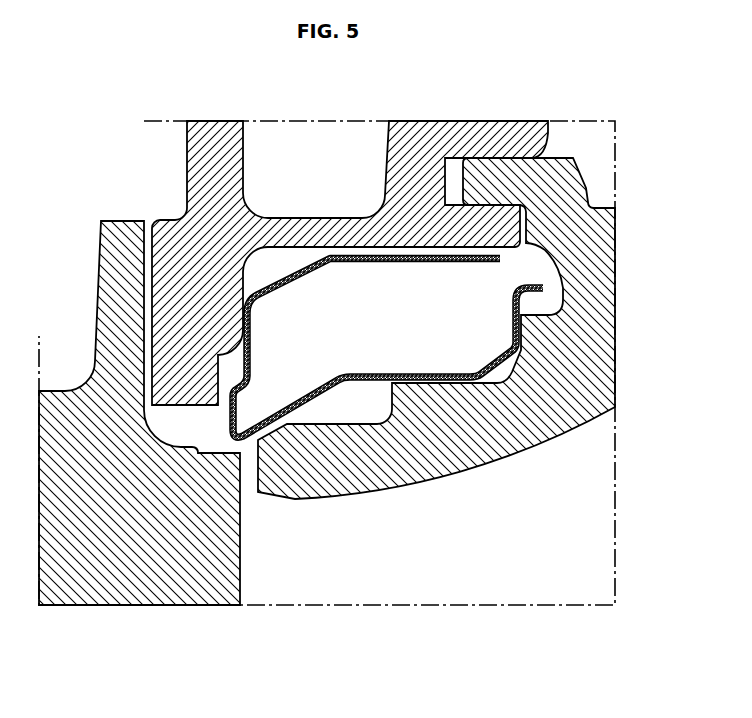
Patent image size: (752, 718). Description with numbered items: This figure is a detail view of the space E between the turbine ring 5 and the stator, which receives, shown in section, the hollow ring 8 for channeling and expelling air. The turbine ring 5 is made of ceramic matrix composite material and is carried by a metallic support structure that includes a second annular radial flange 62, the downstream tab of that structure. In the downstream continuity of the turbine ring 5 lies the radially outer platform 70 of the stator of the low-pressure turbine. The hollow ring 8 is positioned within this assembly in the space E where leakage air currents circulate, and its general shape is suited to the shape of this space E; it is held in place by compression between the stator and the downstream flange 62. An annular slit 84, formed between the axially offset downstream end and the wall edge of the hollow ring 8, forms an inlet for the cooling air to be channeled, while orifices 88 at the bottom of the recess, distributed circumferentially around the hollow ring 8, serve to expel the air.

The turbine ring 5 is at (122, 523).
The second annular radial flange 62 is at (189, 294).
The radially outer platform 70 is at (453, 433).
The hollow ring 8 is at (283, 266).
The annular slit 84 is at (514, 271).
The orifices 88 is at (245, 429).
The space E is at (373, 328).